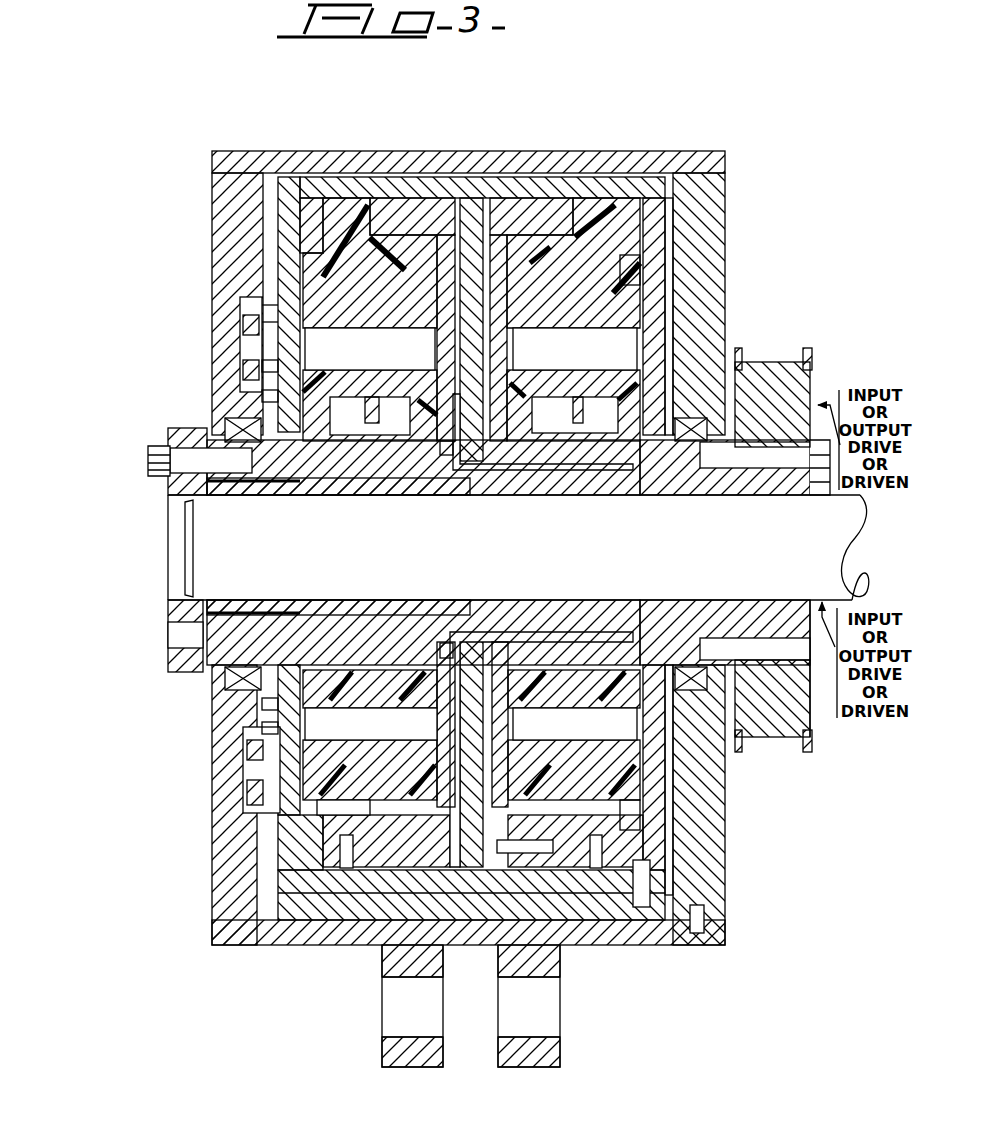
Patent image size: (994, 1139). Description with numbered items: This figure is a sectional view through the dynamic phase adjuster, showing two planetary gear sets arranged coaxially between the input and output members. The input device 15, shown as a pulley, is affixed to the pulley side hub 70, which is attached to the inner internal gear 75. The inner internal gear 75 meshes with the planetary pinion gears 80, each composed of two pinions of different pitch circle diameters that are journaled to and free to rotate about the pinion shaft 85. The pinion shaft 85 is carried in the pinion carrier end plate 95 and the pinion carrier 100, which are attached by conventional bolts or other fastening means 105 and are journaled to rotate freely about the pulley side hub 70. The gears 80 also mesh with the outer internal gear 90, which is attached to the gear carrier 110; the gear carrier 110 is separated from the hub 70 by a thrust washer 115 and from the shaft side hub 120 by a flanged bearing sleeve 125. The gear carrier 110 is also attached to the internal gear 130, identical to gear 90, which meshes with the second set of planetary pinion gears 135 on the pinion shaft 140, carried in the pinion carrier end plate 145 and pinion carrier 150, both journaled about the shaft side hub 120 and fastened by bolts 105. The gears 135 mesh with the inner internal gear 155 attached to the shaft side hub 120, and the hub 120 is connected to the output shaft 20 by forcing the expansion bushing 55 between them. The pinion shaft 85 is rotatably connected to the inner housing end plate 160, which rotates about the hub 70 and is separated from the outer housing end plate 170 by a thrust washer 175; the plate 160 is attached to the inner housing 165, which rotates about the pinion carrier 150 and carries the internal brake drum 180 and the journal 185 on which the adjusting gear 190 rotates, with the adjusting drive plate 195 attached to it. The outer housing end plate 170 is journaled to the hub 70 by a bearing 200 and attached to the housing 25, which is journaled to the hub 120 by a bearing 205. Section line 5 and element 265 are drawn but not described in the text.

The section line 5 is at (225, 127).
The input component 15 is at (780, 362).
The output component 20 is at (222, 560).
The housing 25 is at (570, 172).
The expansion bushing 55 is at (238, 490).
The pulley side hub 70 is at (670, 470).
The inner internal gear 75 is at (545, 237).
The planetary pinion gears 80 is at (630, 267).
The pinion shaft 85 is at (582, 350).
The outer internal gear 90 is at (587, 217).
The pinion carrier end plate 95 is at (517, 297).
The pinion carrier 100 is at (647, 283).
The fastening means 105 is at (205, 335).
The gear carrier 110 is at (472, 230).
The thrust washer 115 is at (503, 470).
The shaft side hub 120 is at (330, 467).
The flanged bearing sleeve 125 is at (450, 455).
The internal gear 130 is at (357, 290).
The second set of planetary pinion gears 135 is at (367, 307).
The pinion shaft 140 is at (376, 350).
The pinion carrier end plate 145 is at (445, 307).
The pinion carrier 150 is at (315, 272).
The inner internal gear 155 is at (395, 250).
The inner housing end plate 160 is at (658, 238).
The inner housing 165 is at (300, 215).
The outer housing end plate 170 is at (698, 190).
The thrust washer 175 is at (667, 400).
The internal brake drum 180 is at (278, 367).
The journal 185 is at (262, 340).
The adjusting gear 190 is at (267, 307).
The adjusting drive plate 195 is at (260, 303).
The bearing 200 is at (700, 428).
The bearing 205 is at (226, 430).
The retainer 265 is at (273, 397).